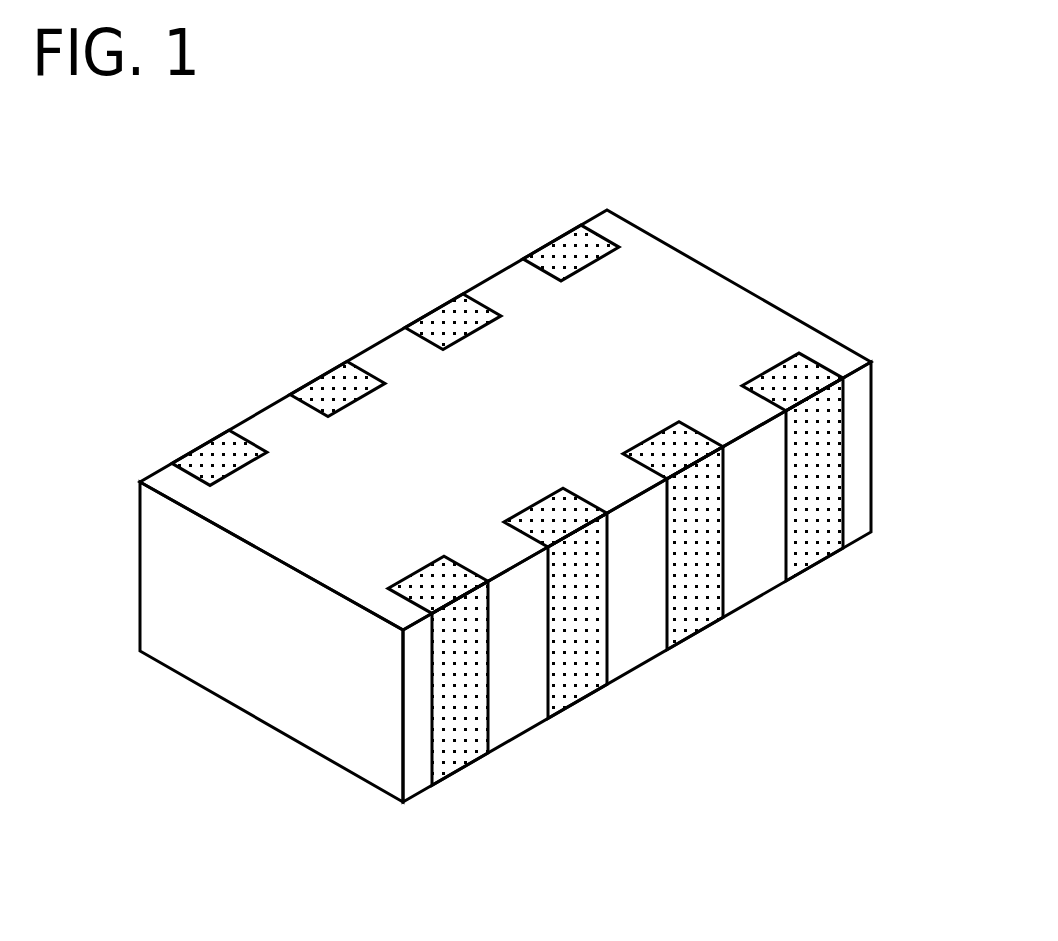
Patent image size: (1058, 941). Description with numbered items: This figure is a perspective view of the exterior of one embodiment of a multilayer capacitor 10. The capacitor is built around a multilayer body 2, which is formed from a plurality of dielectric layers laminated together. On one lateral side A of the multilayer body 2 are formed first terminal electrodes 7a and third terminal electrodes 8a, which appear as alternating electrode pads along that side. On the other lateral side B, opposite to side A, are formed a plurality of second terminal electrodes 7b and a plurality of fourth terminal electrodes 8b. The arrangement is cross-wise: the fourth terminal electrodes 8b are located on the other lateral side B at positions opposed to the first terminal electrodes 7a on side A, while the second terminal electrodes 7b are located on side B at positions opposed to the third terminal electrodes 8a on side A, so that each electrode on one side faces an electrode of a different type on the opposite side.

The multilayer capacitor 10 is at (750, 255).
The multilayer body 2 is at (258, 675).
The one lateral side A is at (491, 286).
The other lateral side B is at (760, 565).
The first terminal electrodes 7a is at (322, 393).
The third terminal electrodes 8a is at (200, 462).
The second terminal electrodes 7b is at (460, 742).
The fourth terminal electrodes 8b is at (578, 678).